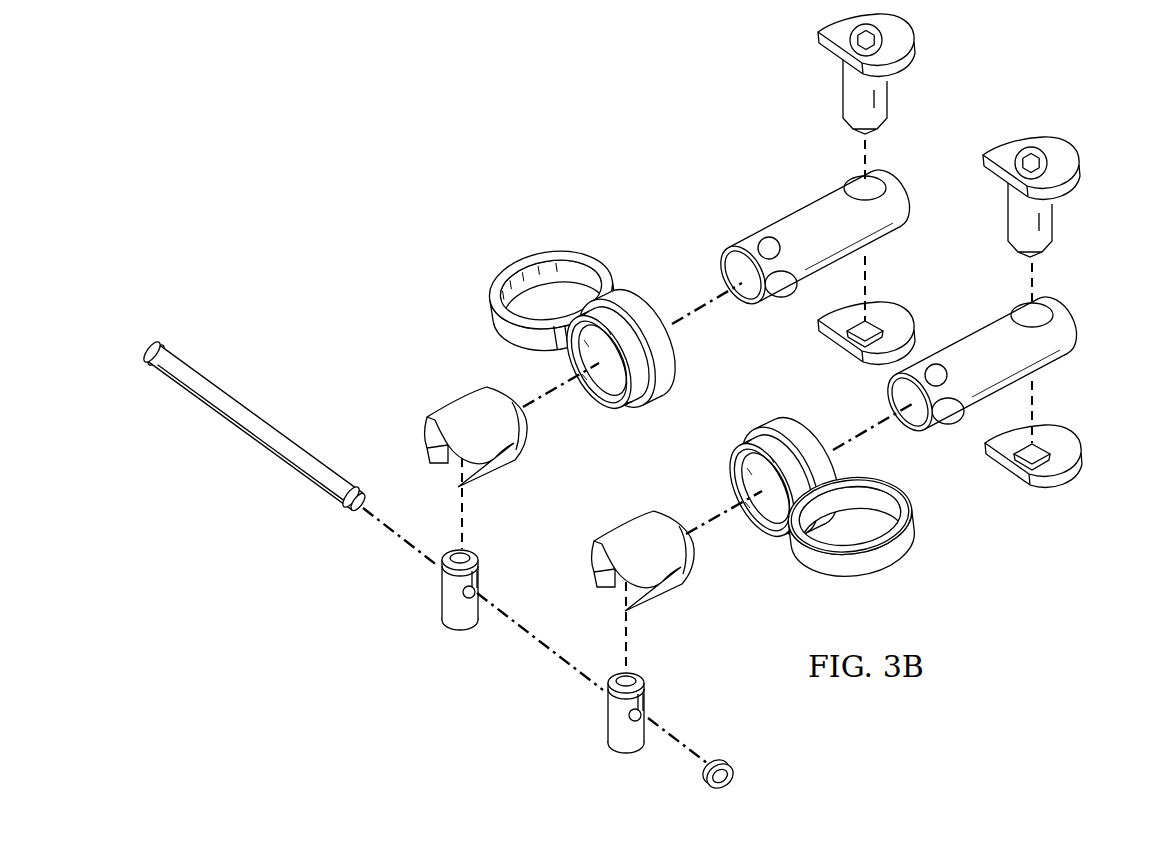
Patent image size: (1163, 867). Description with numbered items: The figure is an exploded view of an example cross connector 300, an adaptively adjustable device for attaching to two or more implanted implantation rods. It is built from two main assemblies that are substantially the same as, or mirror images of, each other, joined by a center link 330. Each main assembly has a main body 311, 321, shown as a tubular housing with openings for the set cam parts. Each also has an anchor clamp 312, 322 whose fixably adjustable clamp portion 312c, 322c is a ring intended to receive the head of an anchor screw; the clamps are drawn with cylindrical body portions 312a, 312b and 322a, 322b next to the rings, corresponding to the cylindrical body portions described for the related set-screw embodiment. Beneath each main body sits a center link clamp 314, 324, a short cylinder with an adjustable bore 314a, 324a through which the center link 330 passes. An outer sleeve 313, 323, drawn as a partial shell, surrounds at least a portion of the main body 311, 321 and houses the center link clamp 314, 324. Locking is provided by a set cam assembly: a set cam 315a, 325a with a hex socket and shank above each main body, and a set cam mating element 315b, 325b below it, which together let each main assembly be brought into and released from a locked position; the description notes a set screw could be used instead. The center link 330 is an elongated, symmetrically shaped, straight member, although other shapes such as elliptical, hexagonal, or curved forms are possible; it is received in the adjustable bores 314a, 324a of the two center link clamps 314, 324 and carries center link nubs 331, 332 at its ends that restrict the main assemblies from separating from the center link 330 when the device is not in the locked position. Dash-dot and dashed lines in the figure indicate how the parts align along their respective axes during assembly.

The cross connector 300 is at (571, 92).
The main body 311 is at (800, 211).
The anchor clamp 312 is at (639, 288).
The bushing flange 312a is at (667, 372).
The bushing front rim 312b is at (637, 394).
The fixably adjustable clamp portion 312c is at (497, 327).
The outer sleeve 313 is at (456, 403).
The center link clamp 314 is at (438, 585).
The adjustable bore 314a is at (478, 592).
The set cam 315a is at (903, 33).
The set cam mating element 315b is at (917, 299).
The main body 321 is at (1055, 363).
The anchor clamp 322 is at (935, 477).
The bushing flange 322a is at (778, 432).
The bushing front rim 322b is at (757, 447).
The fixably adjustable clamp portion 322c is at (805, 558).
The outer sleeve 323 is at (622, 526).
The center link clamp 324 is at (605, 725).
The adjustable bore 324a is at (647, 713).
The set cam 325a is at (1080, 133).
The set cam mating element 325b is at (1057, 437).
The center link 330 is at (247, 437).
The center link nub 331 is at (148, 343).
The center link nub 332 is at (703, 777).